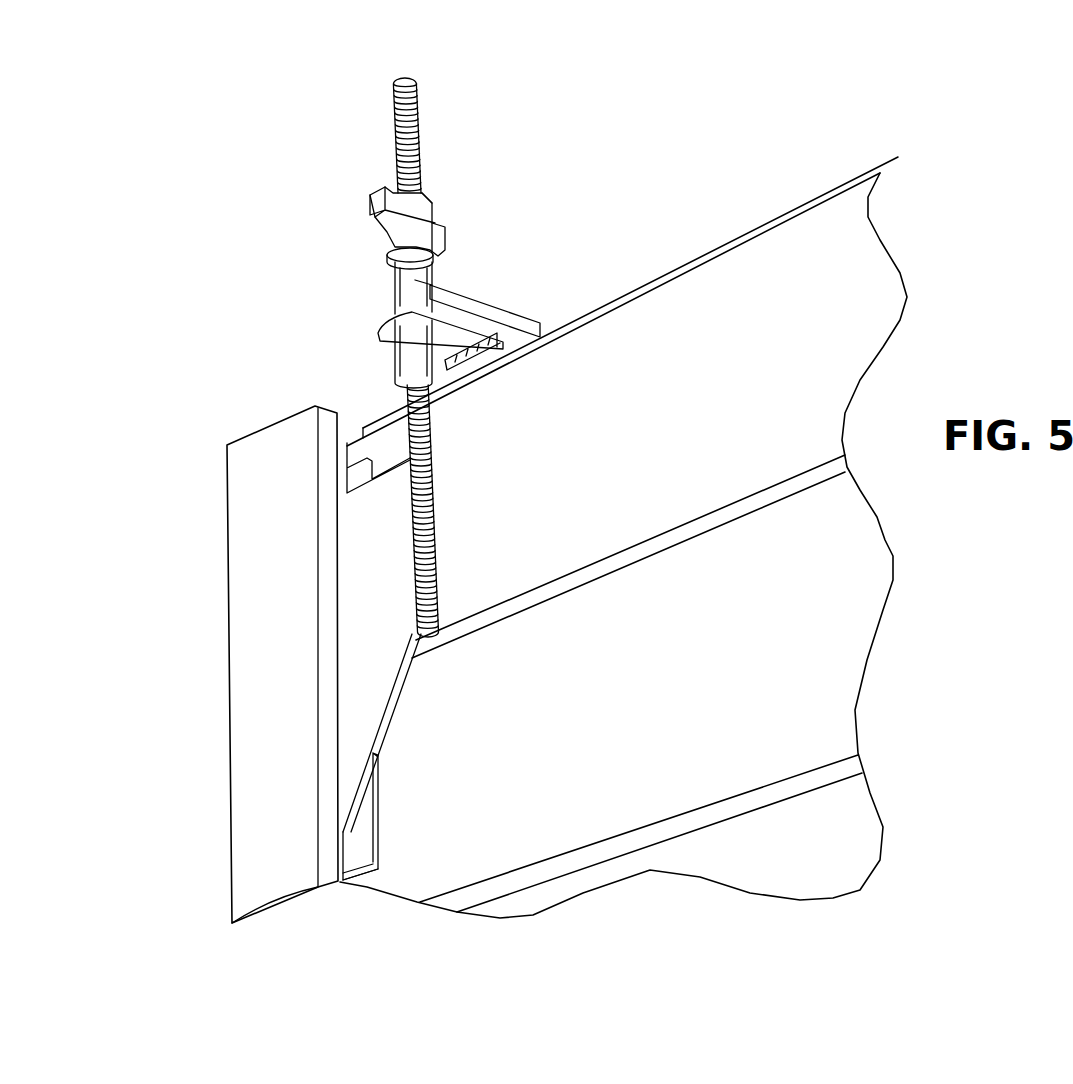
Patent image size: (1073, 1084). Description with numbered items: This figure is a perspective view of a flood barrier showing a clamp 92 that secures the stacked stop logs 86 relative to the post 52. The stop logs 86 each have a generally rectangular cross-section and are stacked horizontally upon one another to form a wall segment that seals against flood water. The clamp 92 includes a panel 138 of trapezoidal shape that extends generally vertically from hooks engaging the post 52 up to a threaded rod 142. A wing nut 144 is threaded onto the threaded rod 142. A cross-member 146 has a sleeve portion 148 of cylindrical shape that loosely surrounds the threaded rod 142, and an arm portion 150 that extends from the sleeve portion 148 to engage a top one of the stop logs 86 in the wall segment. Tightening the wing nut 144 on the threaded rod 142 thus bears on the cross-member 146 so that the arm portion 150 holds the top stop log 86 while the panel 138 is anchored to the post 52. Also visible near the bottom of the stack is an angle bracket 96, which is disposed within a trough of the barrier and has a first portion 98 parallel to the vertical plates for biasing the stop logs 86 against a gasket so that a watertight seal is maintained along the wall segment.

The post 52 is at (243, 433).
The stop logs 86 is at (652, 421).
The clamp 92 is at (377, 335).
The angle bracket 96 is at (380, 790).
The first portion 98 is at (361, 853).
The panel 138 is at (386, 658).
The threaded rod 142 is at (417, 148).
The wing nut 144 is at (373, 203).
The cross-member 146 is at (385, 280).
The sleeve portion 148 is at (405, 300).
The arm portion 150 is at (510, 327).